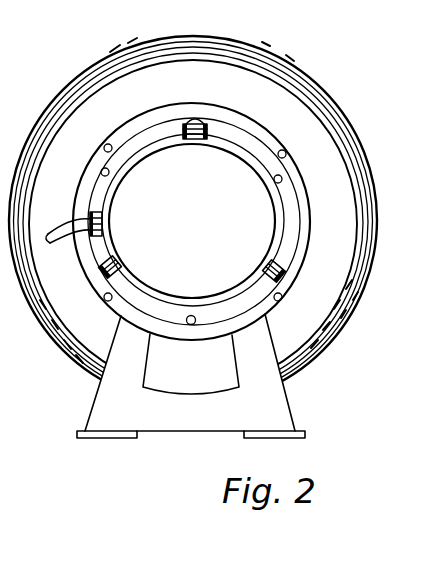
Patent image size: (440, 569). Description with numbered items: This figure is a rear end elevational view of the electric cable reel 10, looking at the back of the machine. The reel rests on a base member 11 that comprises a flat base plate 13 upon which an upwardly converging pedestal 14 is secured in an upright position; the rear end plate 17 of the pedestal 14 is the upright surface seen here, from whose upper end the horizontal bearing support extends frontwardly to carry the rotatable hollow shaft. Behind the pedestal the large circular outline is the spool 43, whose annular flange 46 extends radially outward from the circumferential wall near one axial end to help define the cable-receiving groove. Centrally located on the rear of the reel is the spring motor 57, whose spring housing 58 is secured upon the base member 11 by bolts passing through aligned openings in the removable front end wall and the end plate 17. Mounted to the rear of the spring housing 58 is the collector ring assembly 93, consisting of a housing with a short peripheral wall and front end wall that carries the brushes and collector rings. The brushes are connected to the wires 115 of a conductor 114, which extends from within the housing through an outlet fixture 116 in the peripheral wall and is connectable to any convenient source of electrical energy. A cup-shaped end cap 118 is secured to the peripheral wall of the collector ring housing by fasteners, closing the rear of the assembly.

The electric cable reel 10 is at (82, 376).
The base member 11 is at (295, 422).
The base plate 13 is at (102, 438).
The pedestal 14 is at (279, 403).
The rear end plate 17 is at (191, 377).
The spool 43 is at (107, 54).
The annular flange 46 is at (272, 78).
The spring motor 57 is at (93, 267).
The spring housing 58 is at (115, 285).
The collector ring assembly 93 is at (269, 173).
The conductor 114 is at (64, 219).
The wires 115 is at (46, 242).
The outlet fixture 116 is at (102, 216).
The end cap 118 is at (264, 218).